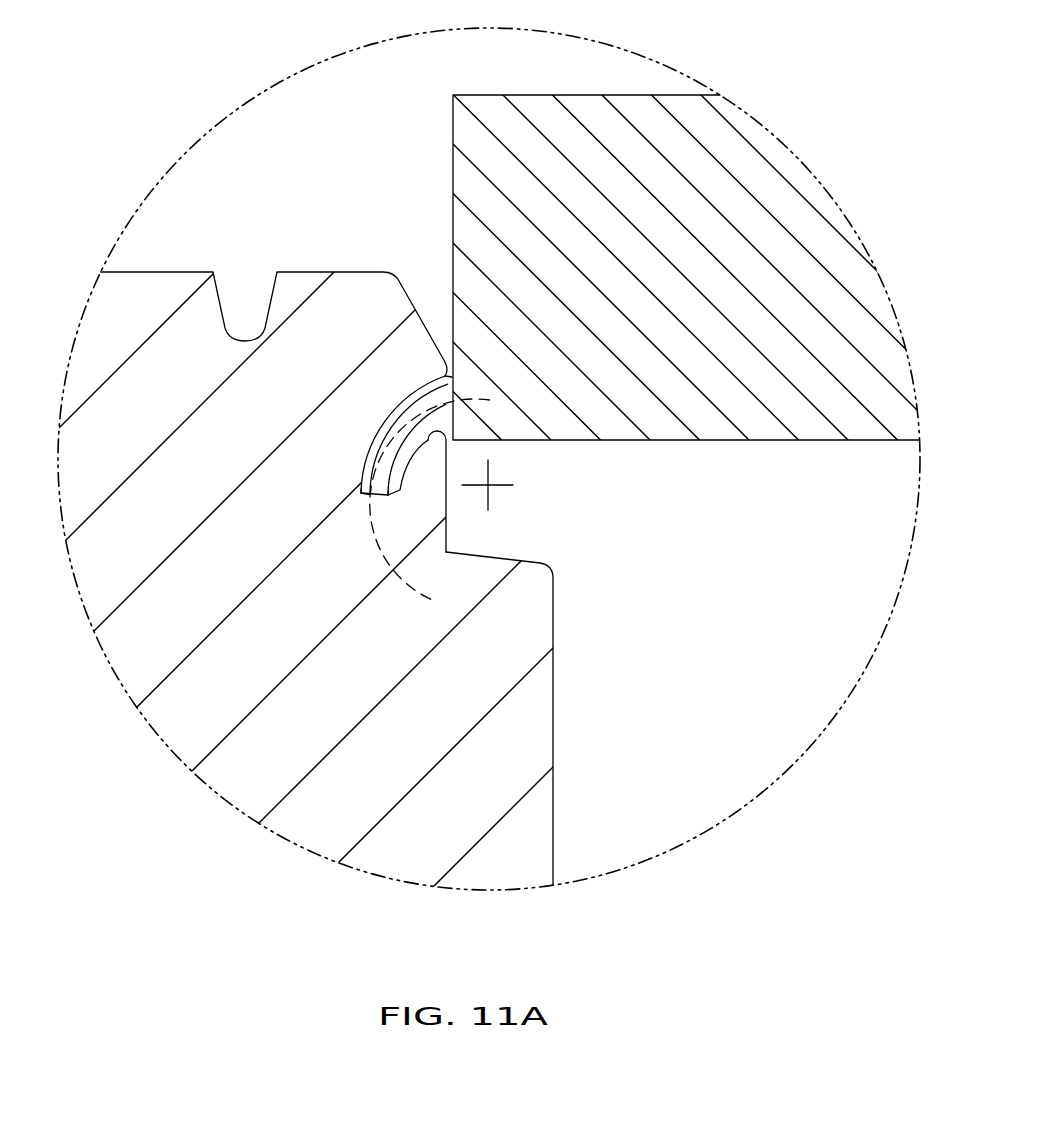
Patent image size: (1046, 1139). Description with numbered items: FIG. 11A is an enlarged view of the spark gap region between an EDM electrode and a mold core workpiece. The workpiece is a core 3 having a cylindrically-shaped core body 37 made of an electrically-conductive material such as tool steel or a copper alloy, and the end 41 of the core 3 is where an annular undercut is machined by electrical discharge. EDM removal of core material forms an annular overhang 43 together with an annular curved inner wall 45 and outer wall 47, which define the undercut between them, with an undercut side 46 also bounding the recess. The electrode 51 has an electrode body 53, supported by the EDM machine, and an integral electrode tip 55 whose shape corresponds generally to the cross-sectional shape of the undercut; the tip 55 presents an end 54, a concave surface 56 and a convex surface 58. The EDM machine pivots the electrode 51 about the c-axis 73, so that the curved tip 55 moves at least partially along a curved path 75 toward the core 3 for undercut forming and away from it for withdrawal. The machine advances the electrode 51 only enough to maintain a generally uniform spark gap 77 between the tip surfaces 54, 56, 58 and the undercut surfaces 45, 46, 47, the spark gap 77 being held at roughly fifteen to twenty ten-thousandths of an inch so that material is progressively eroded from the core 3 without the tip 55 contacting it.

The core 3 is at (148, 256).
The core body 37 is at (490, 792).
The end 41 is at (553, 705).
The annular overhang 43 is at (430, 498).
The inner wall 45 is at (395, 485).
The undercut side 46 is at (378, 492).
The outer wall 47 is at (425, 383).
The electrode 51 is at (677, 94).
The electrode body 53 is at (768, 195).
The end 54 is at (365, 496).
The electrode tip 55 is at (364, 440).
The concave surface 56 is at (452, 455).
The convex surface 58 is at (395, 403).
The c-axis 73 is at (500, 481).
The curved path 75 is at (490, 393).
The spark gap 77 is at (362, 467).